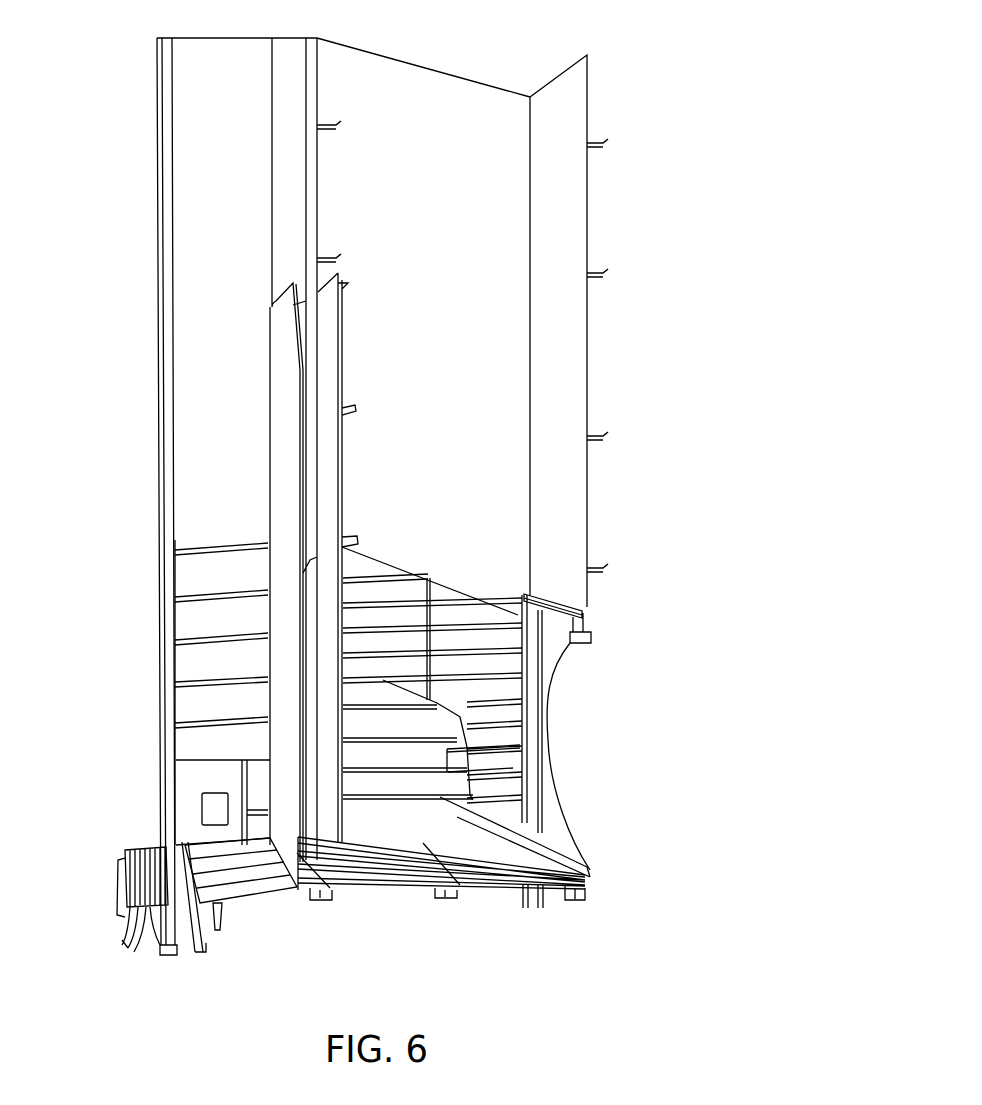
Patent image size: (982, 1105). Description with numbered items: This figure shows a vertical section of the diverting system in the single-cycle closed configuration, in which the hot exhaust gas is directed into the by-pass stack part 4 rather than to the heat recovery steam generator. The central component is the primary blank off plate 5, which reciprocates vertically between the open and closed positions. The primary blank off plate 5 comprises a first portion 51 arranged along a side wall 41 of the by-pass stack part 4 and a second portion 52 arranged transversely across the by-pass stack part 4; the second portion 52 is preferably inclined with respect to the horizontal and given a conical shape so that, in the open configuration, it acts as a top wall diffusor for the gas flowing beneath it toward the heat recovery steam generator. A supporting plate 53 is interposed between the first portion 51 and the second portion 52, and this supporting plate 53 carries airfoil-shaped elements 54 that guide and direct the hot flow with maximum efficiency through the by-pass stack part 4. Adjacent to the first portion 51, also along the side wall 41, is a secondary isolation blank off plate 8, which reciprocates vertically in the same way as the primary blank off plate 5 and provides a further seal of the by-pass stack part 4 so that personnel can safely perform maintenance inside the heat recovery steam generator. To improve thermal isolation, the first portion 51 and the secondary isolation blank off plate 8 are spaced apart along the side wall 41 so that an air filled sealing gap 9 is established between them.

The by-pass stack part 4 is at (443, 235).
The primary blank off plate 5 is at (422, 543).
The secondary isolation blank off plate 8 is at (265, 660).
The air filled sealing gap 9 is at (315, 742).
The side wall 41 is at (287, 262).
The first portion 51 is at (353, 408).
The second portion 52 is at (480, 890).
The supporting plate 53 is at (625, 760).
The airfoil-shaped elements 54 is at (458, 663).